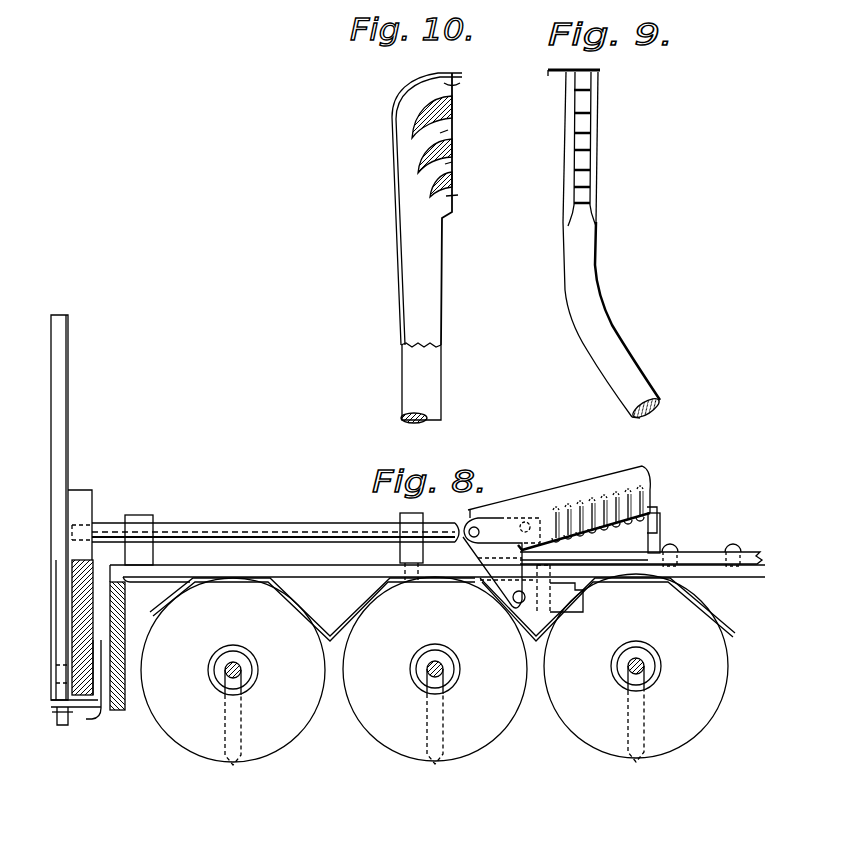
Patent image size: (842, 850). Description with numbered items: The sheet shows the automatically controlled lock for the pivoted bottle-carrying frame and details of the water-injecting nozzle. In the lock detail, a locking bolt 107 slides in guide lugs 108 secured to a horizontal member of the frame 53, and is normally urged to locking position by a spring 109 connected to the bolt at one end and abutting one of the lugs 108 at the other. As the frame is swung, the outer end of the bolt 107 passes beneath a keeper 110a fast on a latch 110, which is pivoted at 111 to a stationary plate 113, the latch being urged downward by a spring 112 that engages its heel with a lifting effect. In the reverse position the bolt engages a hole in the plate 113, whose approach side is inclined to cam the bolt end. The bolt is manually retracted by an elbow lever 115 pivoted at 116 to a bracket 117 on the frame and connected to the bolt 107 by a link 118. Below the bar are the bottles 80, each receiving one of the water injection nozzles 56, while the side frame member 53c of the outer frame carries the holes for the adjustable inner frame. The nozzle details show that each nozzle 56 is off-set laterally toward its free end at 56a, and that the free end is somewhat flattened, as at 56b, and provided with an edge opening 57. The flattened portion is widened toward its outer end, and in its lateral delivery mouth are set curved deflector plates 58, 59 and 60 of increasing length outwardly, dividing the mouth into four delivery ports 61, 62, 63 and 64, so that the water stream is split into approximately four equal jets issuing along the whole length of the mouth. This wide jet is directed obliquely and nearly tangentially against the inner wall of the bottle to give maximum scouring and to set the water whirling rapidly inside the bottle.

In FIG. 8, the frame member 53 is at (325, 572).
In FIG. 8, the side frame member 53c is at (128, 713).
In FIG. 10, the water injection nozzle 56 is at (437, 410).
In FIG. 9, the water injection nozzle 56 is at (628, 377).
In FIG. 8, the water injection nozzle 56 is at (230, 670).
In FIG. 10, the off-set portion of nozzle 56a is at (441, 282).
In FIG. 9, the off-set portion of nozzle 56a is at (590, 272).
In FIG. 9, the flattened end of nozzle 56b is at (598, 163).
In FIG. 9, the edge opening 57 is at (598, 125).
In FIG. 10, the curved deflector plate 58 is at (455, 177).
In FIG. 10, the curved deflector plate 59 is at (455, 144).
In FIG. 10, the curved deflector plate 60 is at (455, 102).
In FIG. 10, the delivery port 61 is at (458, 195).
In FIG. 10, the delivery port 62 is at (452, 162).
In FIG. 10, the delivery port 63 is at (448, 130).
In FIG. 10, the delivery port 64 is at (456, 84).
In FIG. 8, the bottle 80 is at (303, 722).
In FIG. 8, the locking bolt 107 is at (280, 525).
In FIG. 8, the guide lug 108 is at (140, 520).
In FIG. 8, the spring 109 is at (615, 548).
In FIG. 8, the latch 110 is at (68, 462).
In FIG. 8, the keeper 110a is at (92, 495).
In FIG. 8, the pivot 111 is at (93, 640).
In FIG. 8, the spring 112 is at (93, 725).
In FIG. 8, the stationary plate 113 is at (93, 568).
In FIG. 8, the elbow lever 115 is at (610, 478).
In FIG. 8, the pivot 116 is at (520, 613).
In FIG. 8, the bracket 117 is at (545, 612).
In FIG. 8, the link 118 is at (497, 517).